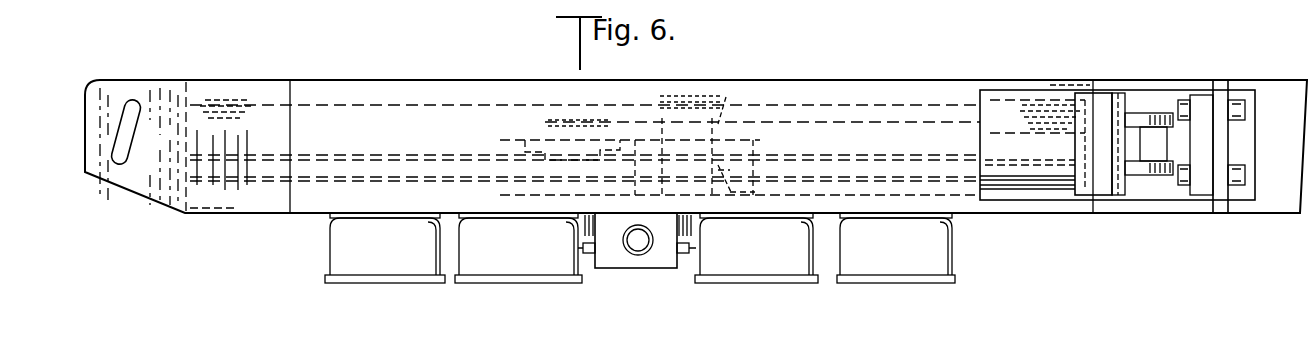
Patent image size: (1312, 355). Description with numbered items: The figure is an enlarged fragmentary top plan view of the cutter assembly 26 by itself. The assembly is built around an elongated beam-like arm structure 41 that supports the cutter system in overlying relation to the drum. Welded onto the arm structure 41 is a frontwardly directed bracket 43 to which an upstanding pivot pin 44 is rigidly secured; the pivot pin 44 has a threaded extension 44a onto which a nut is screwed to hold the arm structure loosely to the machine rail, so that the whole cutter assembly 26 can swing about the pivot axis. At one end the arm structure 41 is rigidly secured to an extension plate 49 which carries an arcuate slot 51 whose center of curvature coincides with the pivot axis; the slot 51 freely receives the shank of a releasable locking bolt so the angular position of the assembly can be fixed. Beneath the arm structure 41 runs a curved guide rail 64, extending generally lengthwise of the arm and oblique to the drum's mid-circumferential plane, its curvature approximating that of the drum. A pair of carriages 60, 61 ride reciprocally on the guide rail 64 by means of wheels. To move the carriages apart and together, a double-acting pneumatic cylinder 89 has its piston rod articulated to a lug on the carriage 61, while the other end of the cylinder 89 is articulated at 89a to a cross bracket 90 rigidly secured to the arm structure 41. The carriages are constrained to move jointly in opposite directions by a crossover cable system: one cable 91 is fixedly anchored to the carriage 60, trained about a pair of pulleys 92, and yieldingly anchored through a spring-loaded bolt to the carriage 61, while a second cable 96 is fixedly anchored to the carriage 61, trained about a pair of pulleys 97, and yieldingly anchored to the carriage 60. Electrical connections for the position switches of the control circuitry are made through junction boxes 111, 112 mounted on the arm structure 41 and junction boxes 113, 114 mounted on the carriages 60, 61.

The cutter assembly 26 is at (1077, 69).
The arm structure 41 is at (931, 80).
The bracket 43 is at (661, 268).
The pivot pin 44 is at (623, 250).
The threaded extension 44a is at (638, 251).
The extension plate 49 is at (163, 100).
The arcuate slot 51 is at (118, 140).
The carriage 60 is at (752, 146).
The carriage 61 is at (530, 148).
The guide rail 64 is at (376, 166).
The pneumatic cylinder 89 is at (1102, 104).
The articulation 89a is at (1150, 178).
The cross bracket 90 is at (1221, 87).
The cable 91 is at (941, 118).
The pulleys 92 is at (1021, 100).
The second cable 96 is at (396, 105).
The pulleys 97 is at (251, 100).
The junction box 111 is at (885, 268).
The junction box 112 is at (338, 262).
The junction box 113 is at (760, 268).
The junction box 114 is at (478, 263).